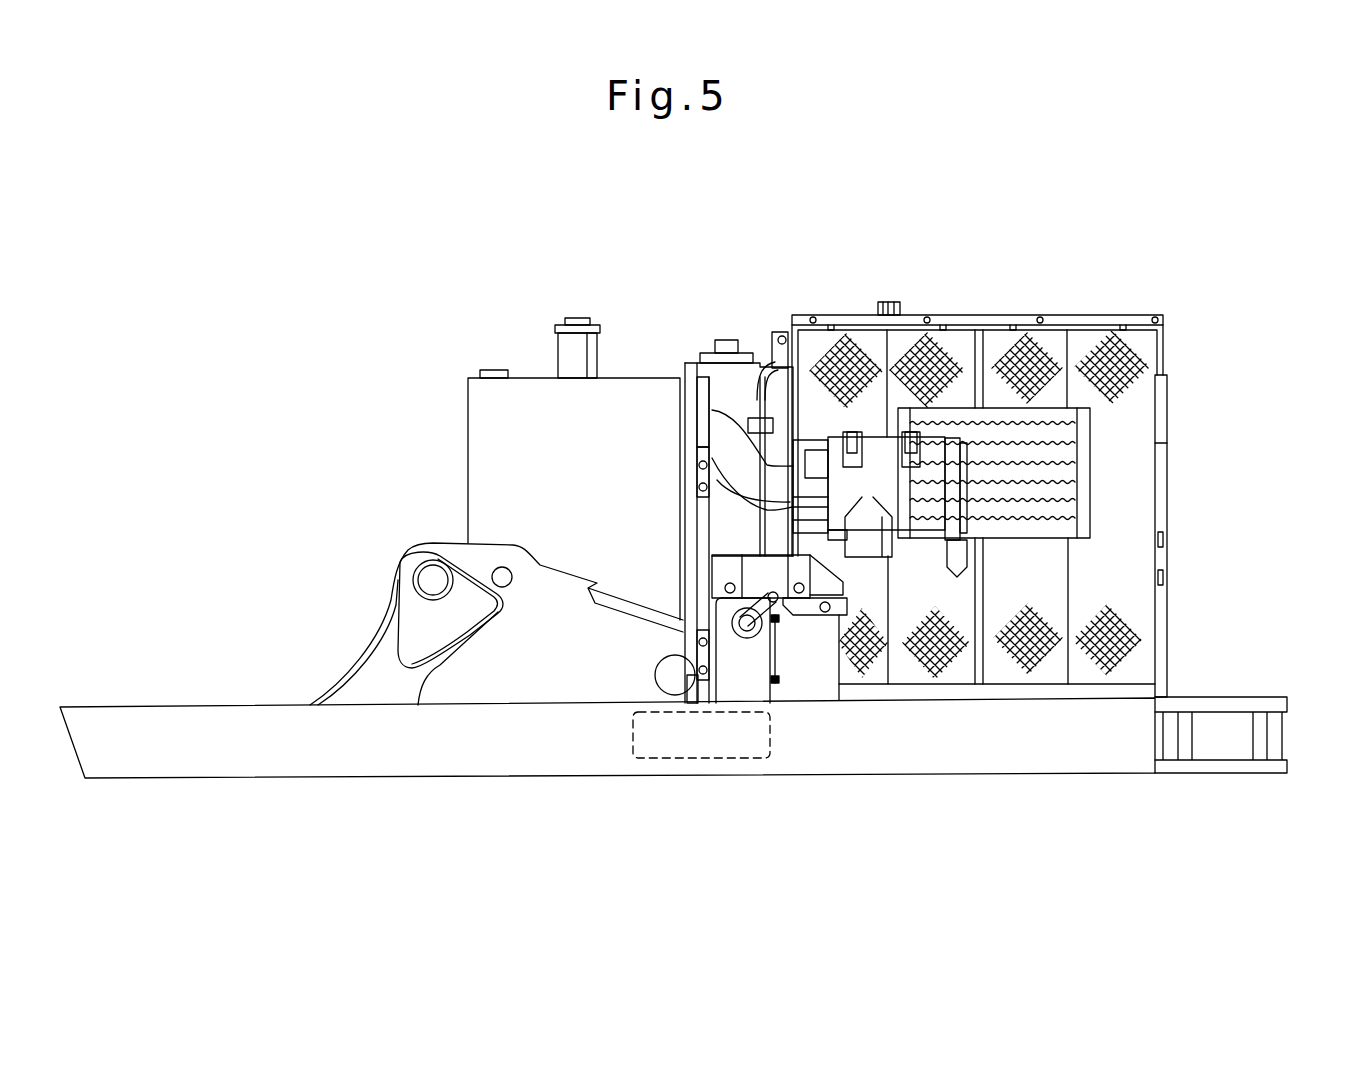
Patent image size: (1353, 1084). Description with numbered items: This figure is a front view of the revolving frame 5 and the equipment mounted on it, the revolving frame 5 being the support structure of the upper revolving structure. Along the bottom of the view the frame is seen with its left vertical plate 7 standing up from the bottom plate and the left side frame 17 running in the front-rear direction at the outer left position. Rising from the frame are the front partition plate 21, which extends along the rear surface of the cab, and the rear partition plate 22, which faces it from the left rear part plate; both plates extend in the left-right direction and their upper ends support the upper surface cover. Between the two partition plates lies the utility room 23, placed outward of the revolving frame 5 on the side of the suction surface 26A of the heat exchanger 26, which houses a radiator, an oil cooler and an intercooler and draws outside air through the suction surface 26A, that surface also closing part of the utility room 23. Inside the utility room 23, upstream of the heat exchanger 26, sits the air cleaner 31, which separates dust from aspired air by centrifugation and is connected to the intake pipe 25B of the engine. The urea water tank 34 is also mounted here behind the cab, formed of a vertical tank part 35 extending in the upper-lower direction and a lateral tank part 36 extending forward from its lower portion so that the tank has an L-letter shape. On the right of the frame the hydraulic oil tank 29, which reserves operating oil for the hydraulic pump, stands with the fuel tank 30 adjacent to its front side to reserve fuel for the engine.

The revolving frame 5 is at (220, 696).
The left vertical plate 7 is at (427, 620).
The left side frame 17 is at (549, 755).
The front partition plate 21 is at (700, 420).
The rear partition plate 22 is at (1162, 515).
The utility room 23 is at (978, 580).
The intake pipe 25B is at (758, 480).
The heat exchanger 26 is at (972, 362).
The suction surface 26A is at (1072, 362).
The hydraulic oil tank 29 is at (745, 385).
The fuel tank 30 is at (537, 435).
The air cleaner 31 is at (872, 493).
The urea water tank 34 is at (784, 697).
The vertical tank part 35 is at (738, 682).
The lateral tank part 36 is at (668, 737).